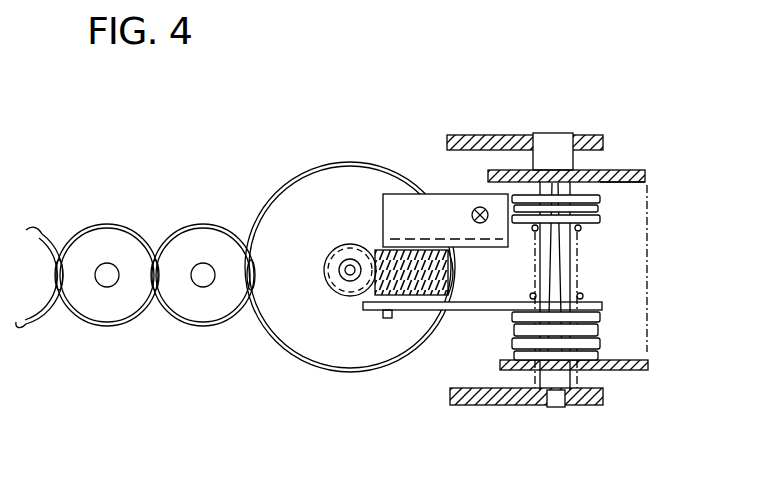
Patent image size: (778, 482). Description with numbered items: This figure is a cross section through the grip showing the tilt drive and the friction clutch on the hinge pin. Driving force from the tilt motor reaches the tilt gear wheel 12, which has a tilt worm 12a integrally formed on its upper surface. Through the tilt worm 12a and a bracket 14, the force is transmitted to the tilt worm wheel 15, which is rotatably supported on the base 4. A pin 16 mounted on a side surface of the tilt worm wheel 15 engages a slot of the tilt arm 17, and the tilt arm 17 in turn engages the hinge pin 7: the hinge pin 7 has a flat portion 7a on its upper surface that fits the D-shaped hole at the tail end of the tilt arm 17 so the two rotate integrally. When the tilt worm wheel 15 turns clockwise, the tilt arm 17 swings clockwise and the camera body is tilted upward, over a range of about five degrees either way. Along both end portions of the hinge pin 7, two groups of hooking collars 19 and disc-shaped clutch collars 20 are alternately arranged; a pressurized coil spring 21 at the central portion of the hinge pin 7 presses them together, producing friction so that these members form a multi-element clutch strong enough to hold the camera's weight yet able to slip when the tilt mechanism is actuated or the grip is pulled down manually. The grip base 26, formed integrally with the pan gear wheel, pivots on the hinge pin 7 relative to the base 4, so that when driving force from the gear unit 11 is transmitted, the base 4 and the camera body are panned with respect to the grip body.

The base 4 is at (600, 140).
The hinge pin 7 is at (553, 150).
The flat portion 7a is at (600, 290).
The gear unit 11 is at (123, 347).
The tilt gear wheel 12 is at (310, 340).
The tilt worm 12a is at (340, 244).
The bracket 14 is at (448, 210).
The tilt worm wheel 15 is at (430, 296).
The pin 16 is at (385, 318).
The tilt arm 17 is at (485, 311).
The hooking collar 19 is at (625, 178).
The clutch collar 20 is at (600, 200).
The pressurized coil spring 21 is at (600, 255).
The grip base 26 is at (645, 181).